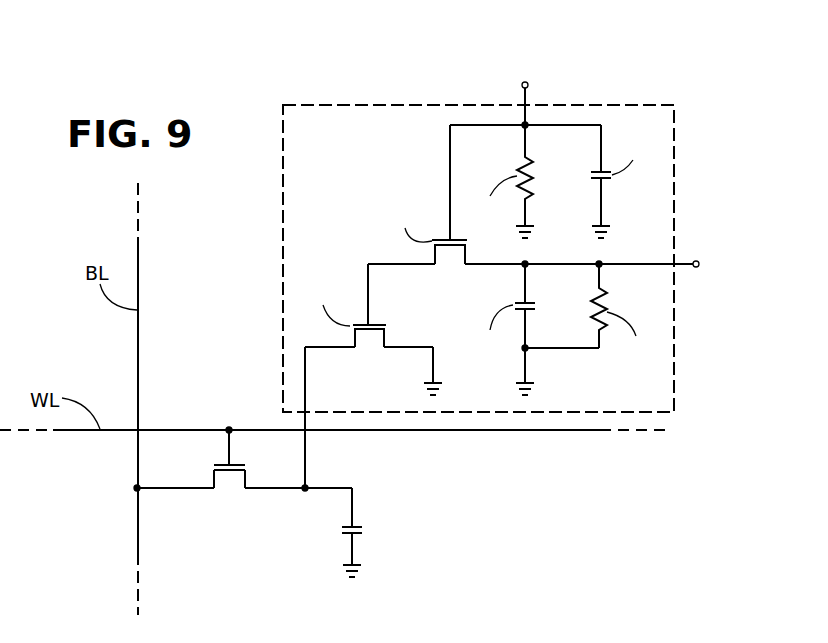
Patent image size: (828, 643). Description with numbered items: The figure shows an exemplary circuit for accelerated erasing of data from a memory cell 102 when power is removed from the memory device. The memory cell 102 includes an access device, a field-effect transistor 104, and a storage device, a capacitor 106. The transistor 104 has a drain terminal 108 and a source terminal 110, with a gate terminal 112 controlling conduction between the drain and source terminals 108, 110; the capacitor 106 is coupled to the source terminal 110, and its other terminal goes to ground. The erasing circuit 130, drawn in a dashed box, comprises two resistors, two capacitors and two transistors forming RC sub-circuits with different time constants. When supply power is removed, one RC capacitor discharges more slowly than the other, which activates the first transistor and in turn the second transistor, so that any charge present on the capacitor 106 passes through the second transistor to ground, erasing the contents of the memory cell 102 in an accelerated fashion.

The memory cell 102 is at (272, 521).
The field-effect transistor 104 is at (229, 457).
The capacitor 106 is at (366, 528).
The drain terminal 108 is at (178, 490).
The source terminal 110 is at (264, 490).
The gate terminal 112 is at (236, 432).
The erasing circuit 130 is at (600, 105).